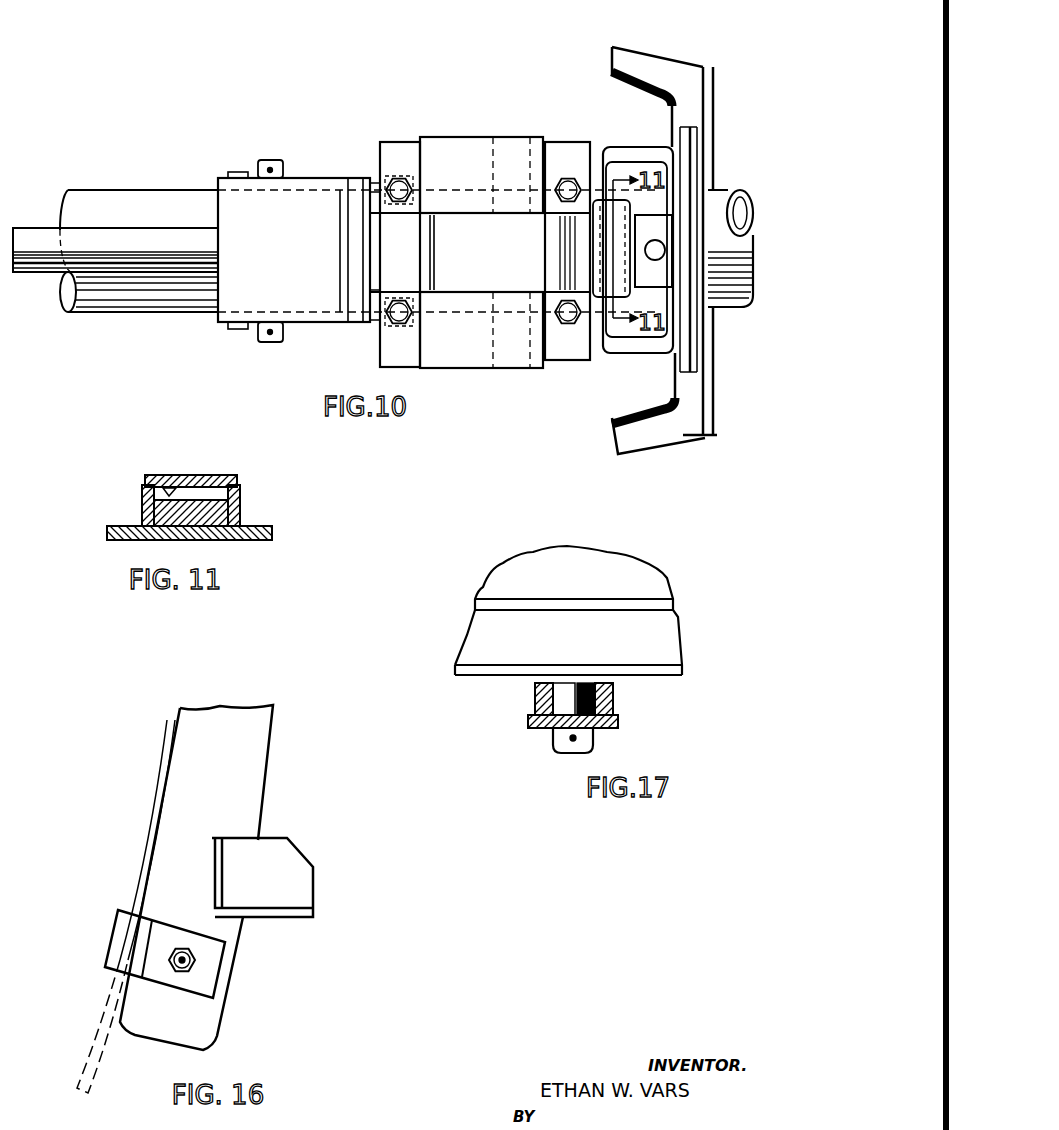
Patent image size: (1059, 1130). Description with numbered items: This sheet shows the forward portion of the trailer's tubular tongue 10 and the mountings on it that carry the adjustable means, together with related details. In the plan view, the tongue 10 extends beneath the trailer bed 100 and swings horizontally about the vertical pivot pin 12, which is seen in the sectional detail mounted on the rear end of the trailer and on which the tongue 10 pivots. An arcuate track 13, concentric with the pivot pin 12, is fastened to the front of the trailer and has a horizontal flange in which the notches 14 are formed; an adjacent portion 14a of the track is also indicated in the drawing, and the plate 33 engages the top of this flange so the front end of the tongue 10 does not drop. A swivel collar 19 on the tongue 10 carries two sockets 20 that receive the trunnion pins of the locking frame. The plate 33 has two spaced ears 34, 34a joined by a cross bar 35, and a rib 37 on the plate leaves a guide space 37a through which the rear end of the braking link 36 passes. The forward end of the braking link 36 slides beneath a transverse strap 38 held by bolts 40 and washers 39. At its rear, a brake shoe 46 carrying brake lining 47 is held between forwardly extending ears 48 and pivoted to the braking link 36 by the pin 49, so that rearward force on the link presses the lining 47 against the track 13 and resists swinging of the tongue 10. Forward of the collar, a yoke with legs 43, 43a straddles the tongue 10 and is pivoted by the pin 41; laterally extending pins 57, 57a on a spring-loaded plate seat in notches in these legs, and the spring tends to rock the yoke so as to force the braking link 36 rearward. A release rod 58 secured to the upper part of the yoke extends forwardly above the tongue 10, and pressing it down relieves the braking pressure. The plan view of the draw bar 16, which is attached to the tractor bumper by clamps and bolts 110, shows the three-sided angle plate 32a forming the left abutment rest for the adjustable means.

In FIG. 10, the tubular tongue 10 is at (140, 292).
In FIG. 17, the tubular tongue 10 is at (535, 703).
In FIG. 17, the vertical pivot pin 12 is at (615, 710).
In FIG. 10, the arcuate track 13 is at (675, 433).
In FIG. 10, the notches 14 is at (650, 84).
In FIG. 10, the plate portion 14a is at (662, 385).
In FIG. 16, the transverse draw bar 16 is at (253, 762).
In FIG. 10, the swivel collar 19 is at (467, 355).
In FIG. 10, the sockets 20 is at (492, 167).
In FIG. 16, the three-sided angle plate 32a is at (283, 917).
In FIG. 10, the plate 33 is at (587, 330).
In FIG. 11, the plate 33 is at (110, 537).
In FIG. 11, the ear 34 is at (140, 508).
In FIG. 11, the ear 34a is at (243, 506).
In FIG. 11, the cross bar 35 is at (222, 478).
In FIG. 10, the braking link 36 is at (487, 227).
In FIG. 11, the rib 37 is at (205, 507).
In FIG. 11, the guide space 37a is at (160, 484).
In FIG. 10, the transverse strap 38 is at (400, 257).
In FIG. 10, the washers 39 is at (372, 150).
In FIG. 10, the bolts 40 is at (398, 180).
In FIG. 10, the pin 41 is at (272, 343).
In FIG. 10, the yoke leg 43 is at (335, 318).
In FIG. 10, the yoke leg 43a is at (313, 184).
In FIG. 10, the brake shoe 46 is at (700, 132).
In FIG. 10, the brake lining 47 is at (690, 165).
In FIG. 10, the ears 48 is at (662, 228).
In FIG. 10, the pin 49 is at (658, 253).
In FIG. 10, the laterally extending pin 57 is at (243, 332).
In FIG. 10, the laterally extending pin 57a is at (233, 170).
In FIG. 10, the release rod 58 is at (123, 237).
In FIG. 17, the trailer bed 100 is at (528, 570).
In FIG. 16, the clamps and bolts 110 is at (112, 957).